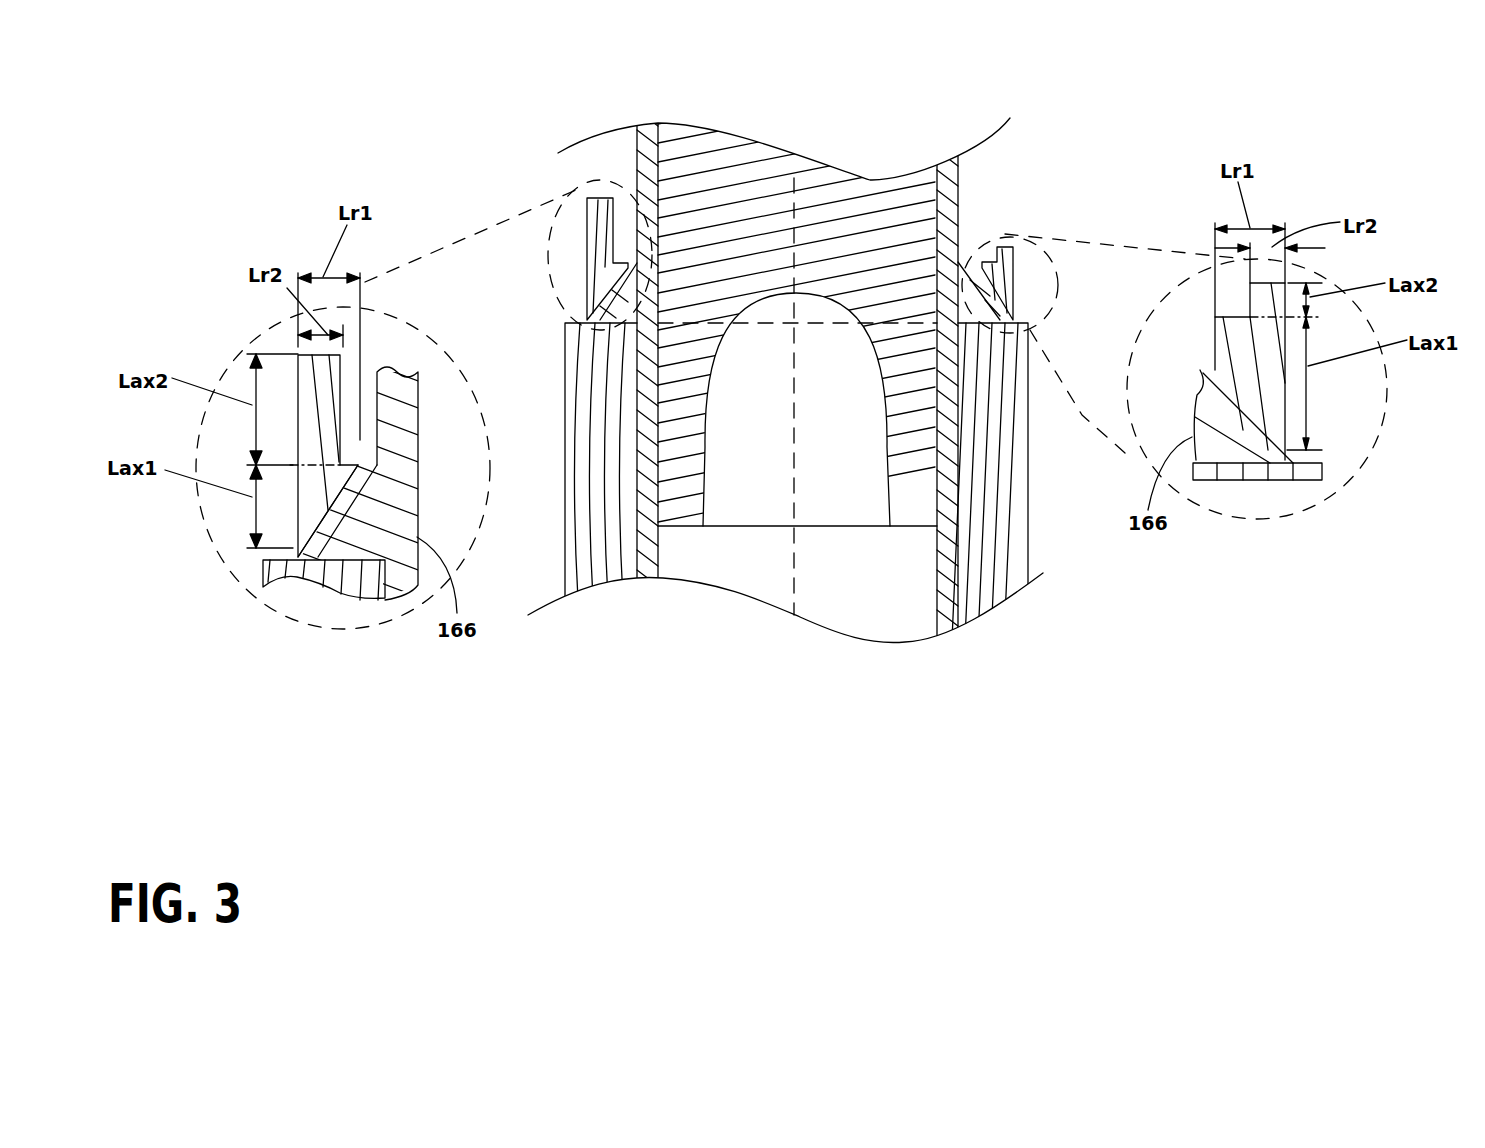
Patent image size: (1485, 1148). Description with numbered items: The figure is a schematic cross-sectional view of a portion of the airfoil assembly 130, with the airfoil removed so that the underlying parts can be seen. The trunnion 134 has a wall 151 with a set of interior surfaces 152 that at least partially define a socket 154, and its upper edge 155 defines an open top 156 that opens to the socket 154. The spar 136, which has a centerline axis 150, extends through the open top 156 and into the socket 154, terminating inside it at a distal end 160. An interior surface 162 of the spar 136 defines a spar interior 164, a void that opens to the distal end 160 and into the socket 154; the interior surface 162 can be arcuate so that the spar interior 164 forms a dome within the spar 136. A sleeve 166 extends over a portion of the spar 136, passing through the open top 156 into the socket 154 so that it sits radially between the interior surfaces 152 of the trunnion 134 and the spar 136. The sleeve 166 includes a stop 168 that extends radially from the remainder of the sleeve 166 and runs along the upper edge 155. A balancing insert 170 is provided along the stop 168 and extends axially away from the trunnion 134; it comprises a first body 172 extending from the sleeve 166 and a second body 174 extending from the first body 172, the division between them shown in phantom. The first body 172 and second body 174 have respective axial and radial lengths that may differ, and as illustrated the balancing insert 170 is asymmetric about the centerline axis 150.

The airfoil assembly 130 is at (318, 118).
The trunnion 134 is at (1040, 545).
The spar 136 is at (940, 390).
The centerline axis 150 is at (813, 178).
The wall 151 is at (565, 552).
The interior surfaces 152 is at (650, 533).
The socket 154 is at (845, 584).
The upper edge 155 is at (575, 322).
The open top 156 is at (905, 325).
The distal end 160 is at (900, 527).
The interior surface 162 is at (890, 472).
The spar interior 164 is at (762, 482).
The sleeve 166 is at (975, 479).
The stop 168 is at (328, 520).
The balancing insert 170 is at (572, 256).
The first body 172 is at (350, 504).
The second body 174 is at (342, 446).